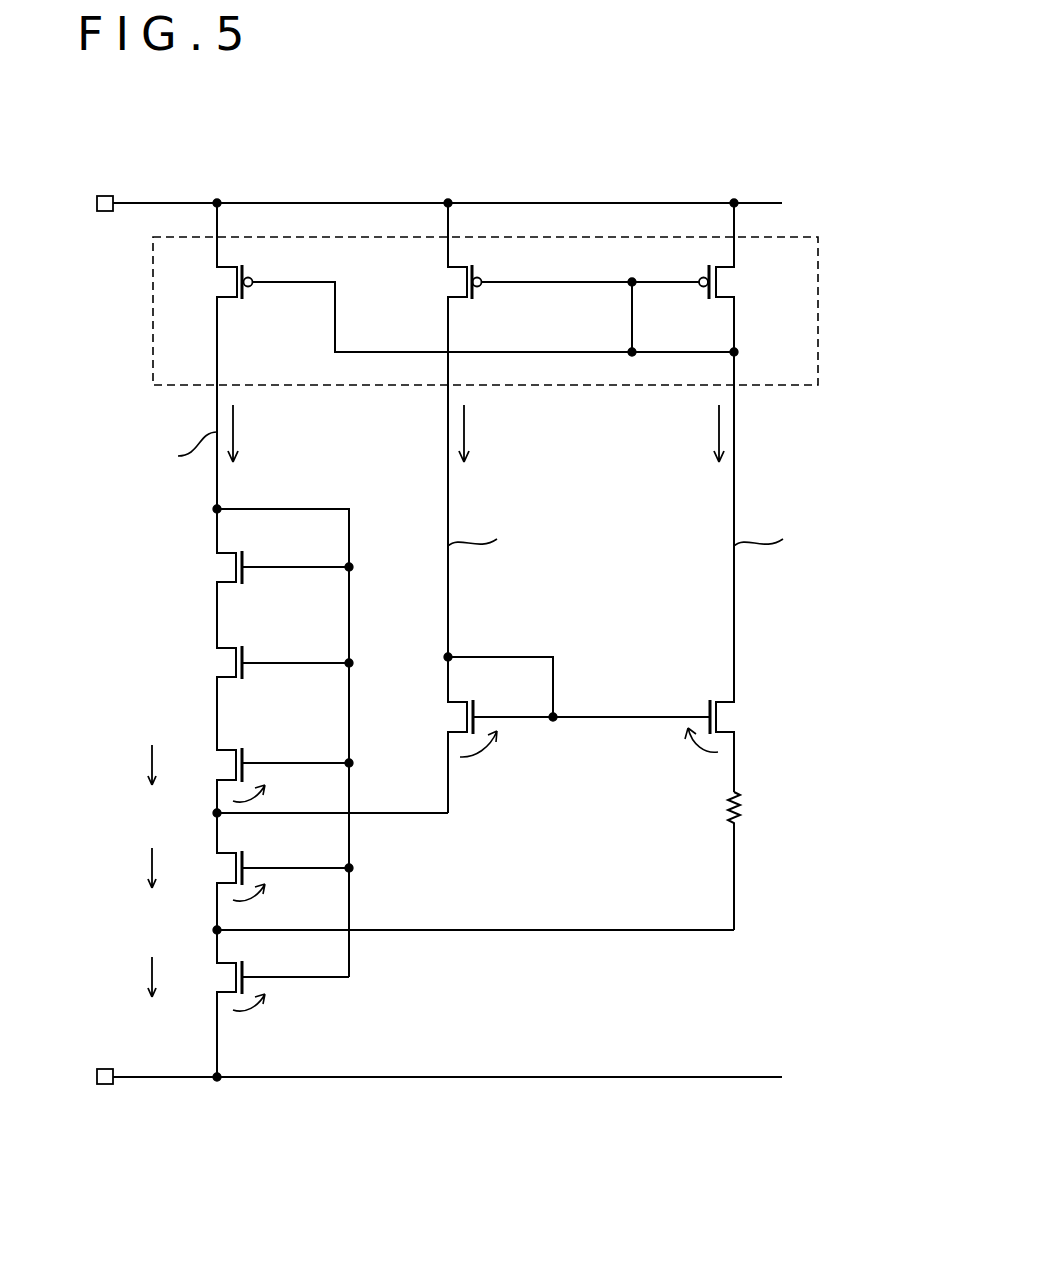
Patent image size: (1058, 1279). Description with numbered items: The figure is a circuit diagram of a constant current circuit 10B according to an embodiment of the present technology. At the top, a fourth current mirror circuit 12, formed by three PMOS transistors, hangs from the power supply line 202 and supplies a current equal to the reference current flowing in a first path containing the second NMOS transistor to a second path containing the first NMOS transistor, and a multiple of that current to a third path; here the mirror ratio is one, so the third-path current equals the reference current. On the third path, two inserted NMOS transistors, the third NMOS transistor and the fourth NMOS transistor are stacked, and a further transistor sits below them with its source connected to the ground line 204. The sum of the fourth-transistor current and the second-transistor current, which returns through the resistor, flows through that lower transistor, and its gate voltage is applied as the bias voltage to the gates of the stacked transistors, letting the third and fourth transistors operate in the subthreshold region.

The constant current circuit 10B is at (878, 168).
The fourth current mirror circuit 12 is at (818, 283).
The power supply line 202 is at (672, 202).
The ground line 204 is at (624, 1078).